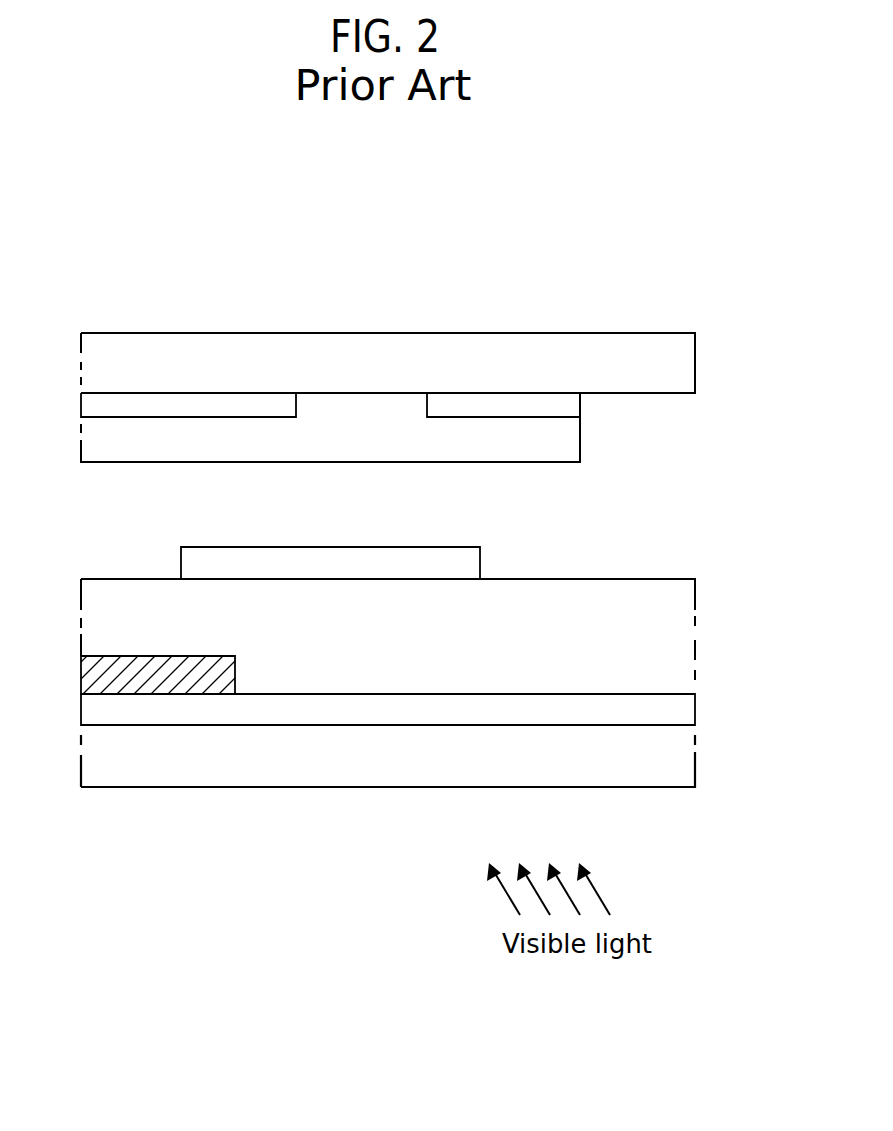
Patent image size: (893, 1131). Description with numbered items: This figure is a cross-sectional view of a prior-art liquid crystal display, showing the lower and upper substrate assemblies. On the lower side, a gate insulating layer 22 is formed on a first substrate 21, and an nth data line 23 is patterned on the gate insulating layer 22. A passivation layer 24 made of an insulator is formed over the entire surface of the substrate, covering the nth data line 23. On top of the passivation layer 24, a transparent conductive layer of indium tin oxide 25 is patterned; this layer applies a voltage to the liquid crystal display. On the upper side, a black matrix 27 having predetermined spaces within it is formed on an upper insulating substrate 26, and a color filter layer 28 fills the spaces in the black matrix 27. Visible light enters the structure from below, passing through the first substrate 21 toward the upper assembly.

The first substrate 21 is at (688, 760).
The gate insulating layer 22 is at (688, 710).
The nth data line 23 is at (88, 672).
The passivation layer 24 is at (688, 643).
The transparent conductive layer of indium tin oxide (ITO) 25 is at (472, 568).
The upper insulating substrate 26 is at (688, 360).
The black matrix 27 is at (572, 403).
The color filter layer 28 is at (572, 443).